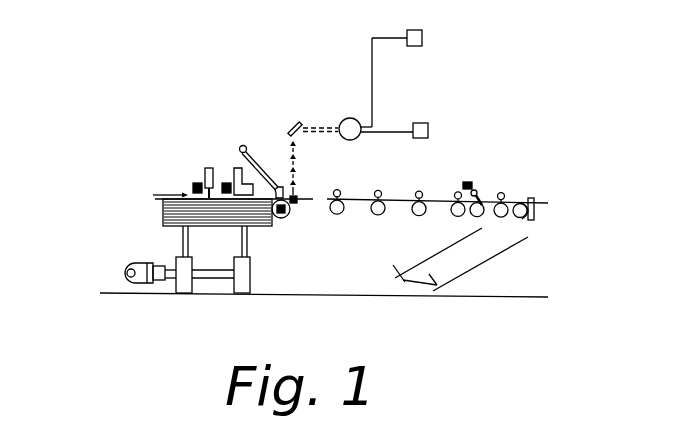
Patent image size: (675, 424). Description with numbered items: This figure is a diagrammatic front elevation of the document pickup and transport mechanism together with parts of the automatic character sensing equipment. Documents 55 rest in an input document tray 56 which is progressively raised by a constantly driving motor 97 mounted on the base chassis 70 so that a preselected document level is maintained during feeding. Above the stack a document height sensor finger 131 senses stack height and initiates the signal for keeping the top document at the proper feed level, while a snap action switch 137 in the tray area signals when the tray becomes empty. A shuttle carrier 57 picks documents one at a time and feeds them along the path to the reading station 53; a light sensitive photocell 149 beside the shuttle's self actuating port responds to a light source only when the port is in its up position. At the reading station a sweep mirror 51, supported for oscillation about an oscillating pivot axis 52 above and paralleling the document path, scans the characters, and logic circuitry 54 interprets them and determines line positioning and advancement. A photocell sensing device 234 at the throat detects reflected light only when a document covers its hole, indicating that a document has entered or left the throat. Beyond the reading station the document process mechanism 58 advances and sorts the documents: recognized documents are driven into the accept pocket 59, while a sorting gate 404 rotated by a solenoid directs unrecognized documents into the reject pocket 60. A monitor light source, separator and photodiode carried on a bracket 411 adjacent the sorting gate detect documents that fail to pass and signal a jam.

The sweep mirror 51 is at (302, 125).
The oscillating pivot axis 52 is at (290, 128).
The reading station 53 is at (293, 203).
The logic circuitry 54 is at (422, 39).
The documents 55 is at (163, 207).
The input document tray 56 is at (163, 213).
The shuttle carrier 57 is at (238, 168).
The document process mechanism 58 is at (340, 191).
The accept pocket 59 is at (443, 270).
The reject pocket 60 is at (408, 260).
The base chassis 70 is at (193, 295).
The constantly driving motor 97 is at (143, 285).
The document height sensor finger 131 is at (206, 168).
The snap action switch 137 is at (192, 185).
The light sensitive photocell 149 is at (222, 185).
The photocell sensing device 234 is at (276, 218).
The sorting gate 404 is at (481, 192).
The bracket 411 is at (473, 182).